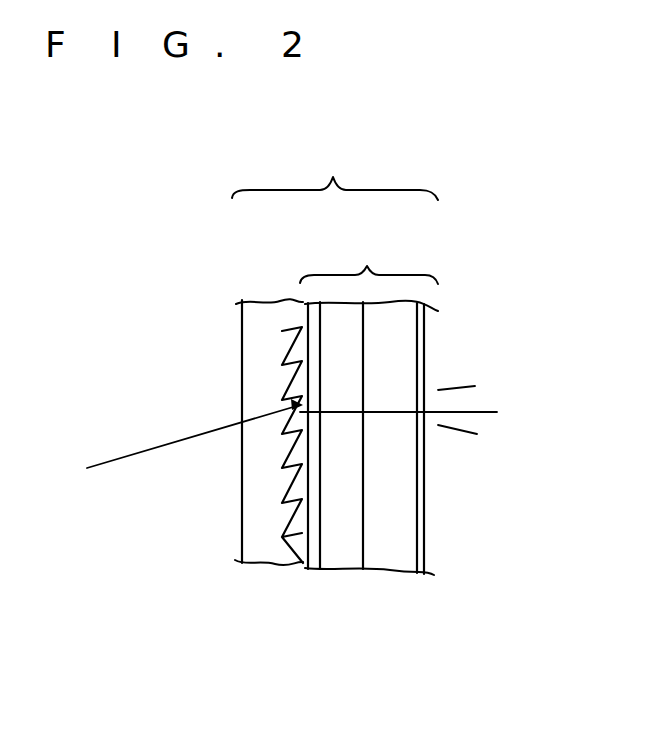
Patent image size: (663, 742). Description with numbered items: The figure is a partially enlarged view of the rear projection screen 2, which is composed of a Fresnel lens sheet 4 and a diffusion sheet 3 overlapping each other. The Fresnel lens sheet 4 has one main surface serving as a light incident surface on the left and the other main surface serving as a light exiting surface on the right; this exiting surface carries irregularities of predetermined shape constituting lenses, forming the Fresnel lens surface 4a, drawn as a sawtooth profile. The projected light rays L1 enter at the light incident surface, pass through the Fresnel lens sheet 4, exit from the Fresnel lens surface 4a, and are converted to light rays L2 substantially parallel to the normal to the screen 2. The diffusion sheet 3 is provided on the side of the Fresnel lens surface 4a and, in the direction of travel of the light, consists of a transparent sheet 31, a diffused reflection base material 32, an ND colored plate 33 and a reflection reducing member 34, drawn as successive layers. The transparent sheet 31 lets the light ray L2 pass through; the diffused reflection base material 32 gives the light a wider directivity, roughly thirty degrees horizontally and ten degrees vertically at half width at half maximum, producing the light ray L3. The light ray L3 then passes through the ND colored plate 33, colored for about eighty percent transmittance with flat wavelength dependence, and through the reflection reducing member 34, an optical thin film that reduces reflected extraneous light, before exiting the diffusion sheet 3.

The rear projection screen 2 is at (333, 178).
The diffusion sheet 3 is at (378, 453).
The transparent sheet 31 is at (312, 565).
The diffused reflection base material 32 is at (335, 562).
The ND colored plate 33 is at (387, 560).
The reflection reducing member 34 is at (418, 575).
The Fresnel lens sheet 4 is at (231, 396).
The Fresnel lens surface 4a is at (300, 322).
The projected light rays L1 is at (152, 419).
The light rays L2 is at (302, 405).
The light ray L3 is at (527, 395).